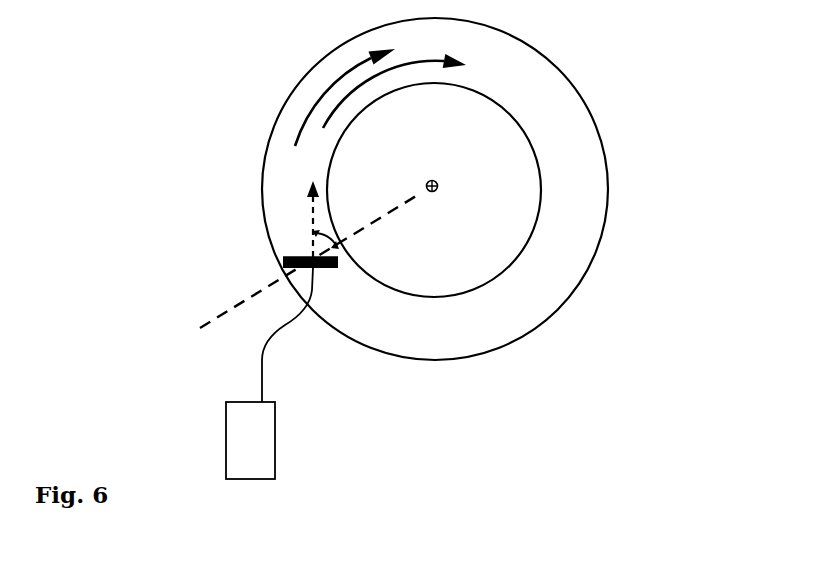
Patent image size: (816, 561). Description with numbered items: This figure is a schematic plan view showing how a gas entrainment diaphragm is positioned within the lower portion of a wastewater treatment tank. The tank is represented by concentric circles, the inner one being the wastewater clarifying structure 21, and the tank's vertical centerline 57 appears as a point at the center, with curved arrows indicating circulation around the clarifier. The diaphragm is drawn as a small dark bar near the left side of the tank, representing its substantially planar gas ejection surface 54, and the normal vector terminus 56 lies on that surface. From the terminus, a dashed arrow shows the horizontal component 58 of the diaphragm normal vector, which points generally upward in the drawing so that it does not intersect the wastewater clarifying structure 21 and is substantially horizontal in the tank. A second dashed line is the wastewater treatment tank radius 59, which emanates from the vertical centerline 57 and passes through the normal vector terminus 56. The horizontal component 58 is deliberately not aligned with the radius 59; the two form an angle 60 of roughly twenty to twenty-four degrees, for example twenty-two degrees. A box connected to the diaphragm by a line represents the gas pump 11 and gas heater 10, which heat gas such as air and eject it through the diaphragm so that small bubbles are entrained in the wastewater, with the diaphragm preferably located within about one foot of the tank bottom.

The wastewater clarifying structure 21 is at (525, 118).
The vertical centerline 57 is at (439, 178).
The wastewater treatment tank radius 59 is at (397, 222).
The horizontal component 58 is at (314, 232).
The angle 60 is at (338, 244).
The substantially planar gas ejection surface 54 is at (290, 257).
The normal vector terminus 56 is at (307, 255).
The gas pump 11 is at (326, 446).
The gas heater 10 is at (280, 448).